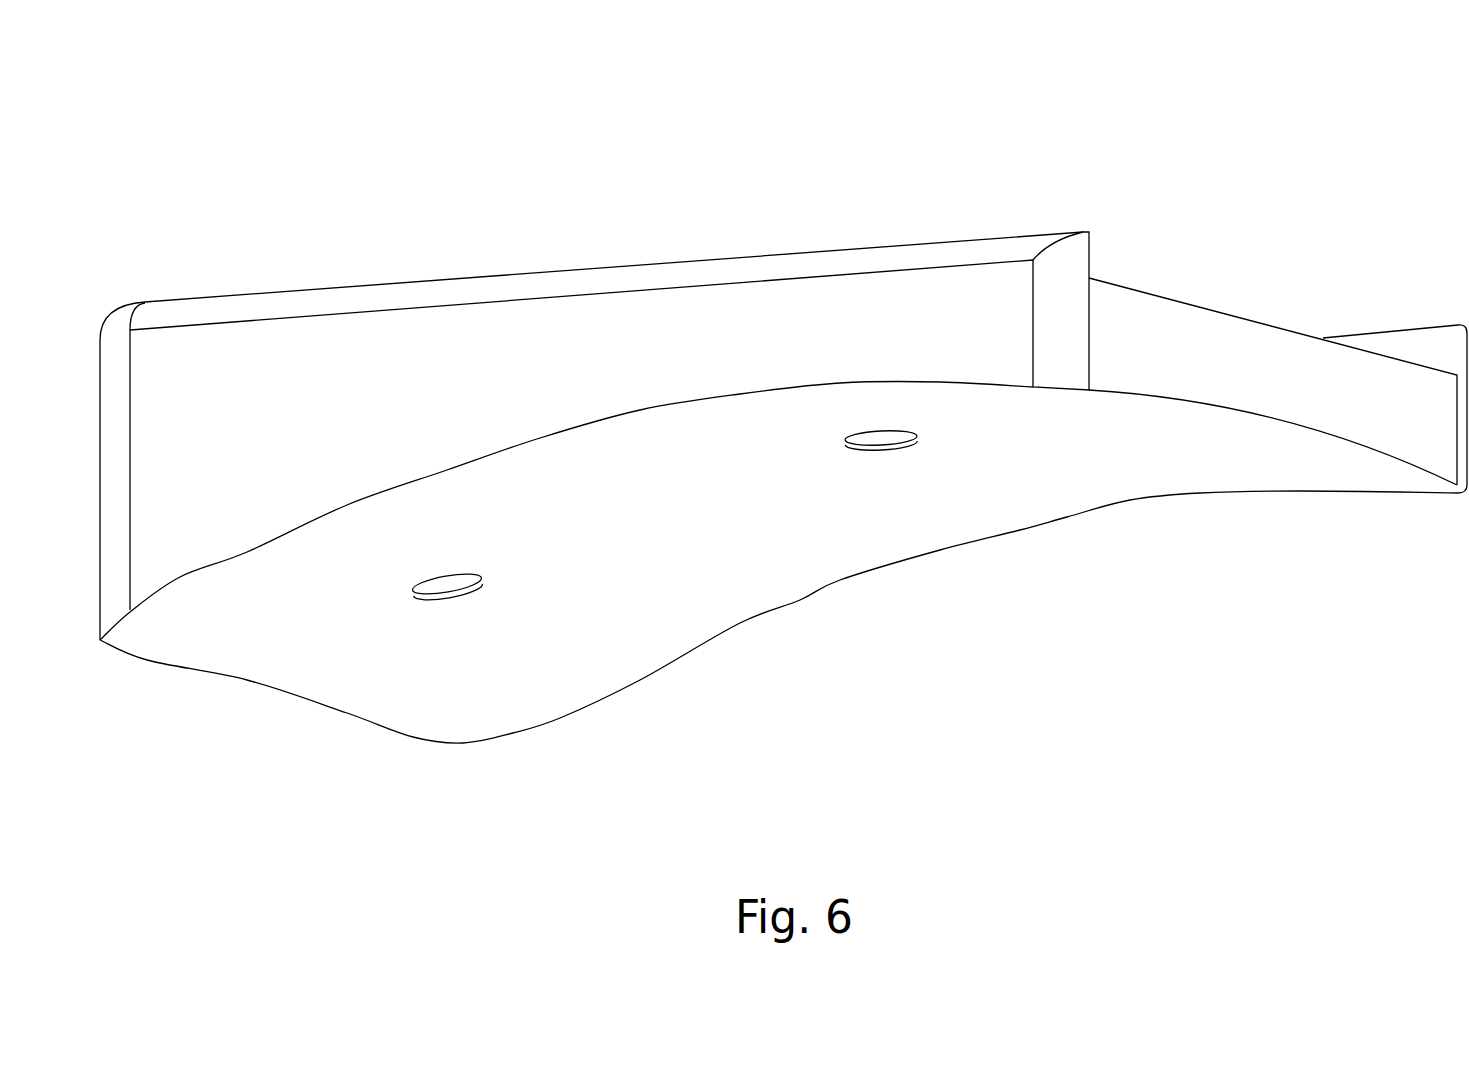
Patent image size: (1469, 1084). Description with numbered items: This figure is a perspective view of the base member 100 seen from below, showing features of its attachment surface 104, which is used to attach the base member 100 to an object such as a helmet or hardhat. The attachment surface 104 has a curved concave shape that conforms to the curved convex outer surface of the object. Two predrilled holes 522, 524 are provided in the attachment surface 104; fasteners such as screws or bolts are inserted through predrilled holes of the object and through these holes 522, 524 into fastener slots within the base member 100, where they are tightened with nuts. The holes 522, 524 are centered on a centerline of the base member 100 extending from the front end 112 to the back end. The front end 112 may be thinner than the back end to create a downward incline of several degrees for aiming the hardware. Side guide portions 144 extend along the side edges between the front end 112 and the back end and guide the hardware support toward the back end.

The base member 100 is at (783, 429).
The attachment surface 104 is at (703, 532).
The front end 112 is at (1440, 345).
The side guide portions 144 is at (1072, 255).
The predrilled hole 522 is at (890, 452).
The predrilled hole 524 is at (468, 598).